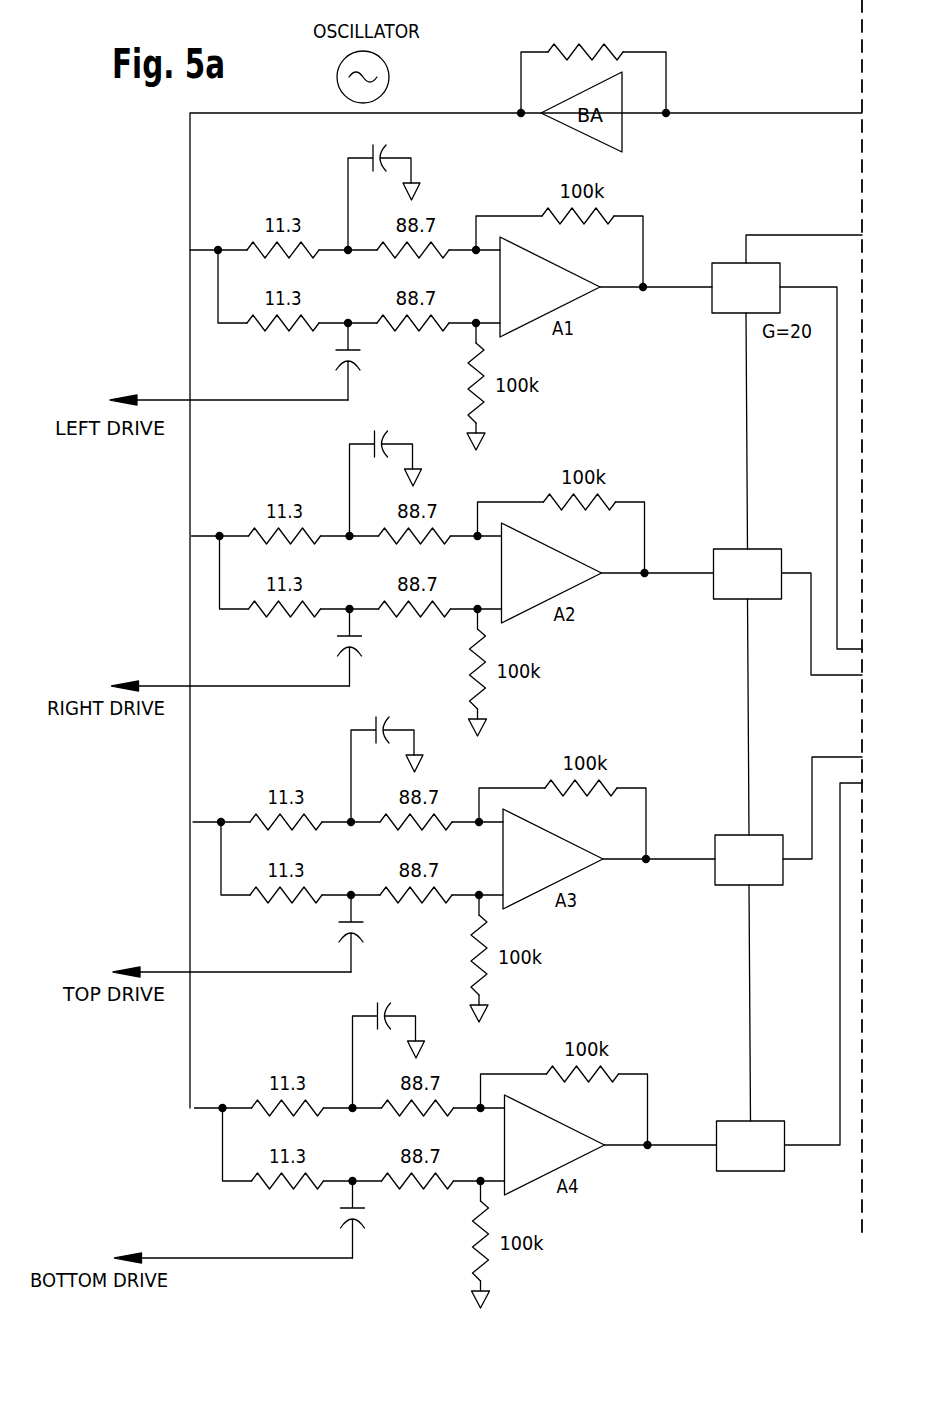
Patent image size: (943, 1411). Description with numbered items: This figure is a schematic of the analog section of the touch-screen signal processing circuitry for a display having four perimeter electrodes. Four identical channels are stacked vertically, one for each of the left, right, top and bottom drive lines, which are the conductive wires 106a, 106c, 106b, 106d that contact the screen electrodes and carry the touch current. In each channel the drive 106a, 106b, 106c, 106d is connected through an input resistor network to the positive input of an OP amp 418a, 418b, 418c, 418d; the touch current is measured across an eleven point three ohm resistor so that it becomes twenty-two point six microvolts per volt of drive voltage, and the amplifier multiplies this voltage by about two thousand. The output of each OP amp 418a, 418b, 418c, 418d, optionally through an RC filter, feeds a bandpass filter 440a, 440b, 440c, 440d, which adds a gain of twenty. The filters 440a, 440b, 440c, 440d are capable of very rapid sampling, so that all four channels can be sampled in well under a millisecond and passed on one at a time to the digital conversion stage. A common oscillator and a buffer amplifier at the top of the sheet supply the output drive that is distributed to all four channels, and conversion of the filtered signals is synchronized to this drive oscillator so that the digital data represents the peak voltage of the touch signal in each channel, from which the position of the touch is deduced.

The conductive wire 106a is at (163, 399).
The conductive wire 106b is at (222, 942).
The conductive wire 106c is at (221, 656).
The conductive wire 106d is at (224, 1228).
The OP amp 418a is at (587, 294).
The OP amp 418b is at (578, 574).
The OP amp 418c is at (579, 860).
The OP amp 418d is at (581, 1146).
The bandpass filter 440a is at (714, 262).
The bandpass filter 440b is at (718, 550).
The bandpass filter 440c is at (719, 836).
The bandpass filter 440d is at (721, 1122).